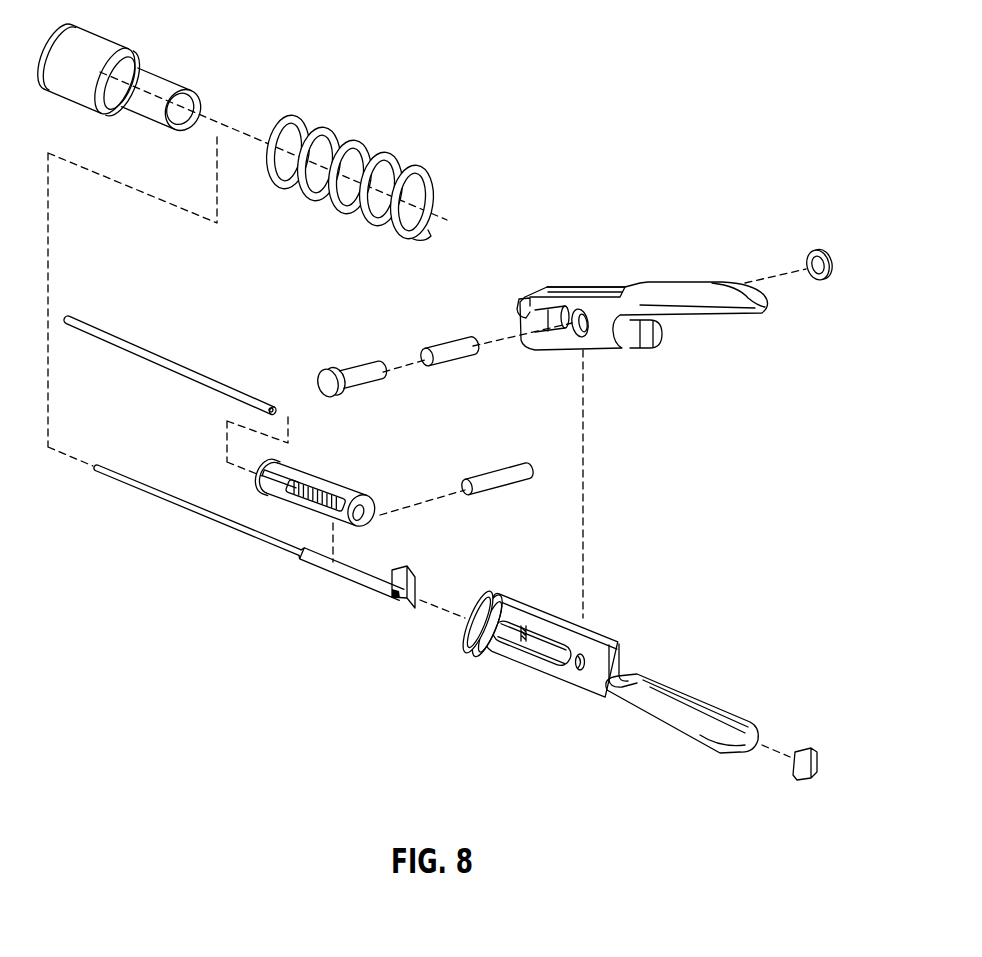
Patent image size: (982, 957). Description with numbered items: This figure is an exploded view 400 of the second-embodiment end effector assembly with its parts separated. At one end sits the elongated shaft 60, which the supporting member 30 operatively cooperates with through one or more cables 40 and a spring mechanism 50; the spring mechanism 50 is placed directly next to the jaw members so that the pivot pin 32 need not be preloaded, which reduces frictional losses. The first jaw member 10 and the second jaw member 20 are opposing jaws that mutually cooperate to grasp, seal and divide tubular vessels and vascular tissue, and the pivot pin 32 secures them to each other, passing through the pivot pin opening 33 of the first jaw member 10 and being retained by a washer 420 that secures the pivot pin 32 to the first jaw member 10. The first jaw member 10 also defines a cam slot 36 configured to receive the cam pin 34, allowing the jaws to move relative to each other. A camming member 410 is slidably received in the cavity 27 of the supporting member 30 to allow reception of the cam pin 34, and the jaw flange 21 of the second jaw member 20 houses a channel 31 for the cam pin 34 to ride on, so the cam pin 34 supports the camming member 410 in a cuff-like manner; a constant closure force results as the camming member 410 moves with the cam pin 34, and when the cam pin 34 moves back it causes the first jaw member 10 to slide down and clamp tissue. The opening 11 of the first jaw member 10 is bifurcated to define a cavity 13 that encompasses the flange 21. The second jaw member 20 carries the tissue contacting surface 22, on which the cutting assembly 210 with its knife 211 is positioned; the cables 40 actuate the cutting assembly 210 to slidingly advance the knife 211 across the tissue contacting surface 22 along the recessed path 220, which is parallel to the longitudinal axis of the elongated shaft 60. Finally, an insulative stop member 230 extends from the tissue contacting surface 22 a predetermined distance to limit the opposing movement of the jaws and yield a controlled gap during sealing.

The first jaw member 10 is at (611, 313).
The opening 11 is at (585, 286).
The cavity 13 is at (642, 340).
The second jaw member 20 is at (588, 662).
The jaw flange 21 is at (600, 668).
The tissue contacting surface 22 is at (647, 673).
The cavity 27 is at (477, 622).
The supporting member 30 is at (487, 626).
The channel 31 is at (532, 643).
The pivot pin 32 is at (357, 365).
The pivot pin opening 33 is at (573, 339).
The cam pin 34 is at (497, 466).
The cam slot 36 is at (518, 312).
The cables 40 is at (140, 352).
The spring mechanism 50 is at (364, 141).
The elongated shaft 60 is at (110, 38).
The cutting assembly 210 is at (345, 594).
The knife 211 is at (404, 567).
The recessed path 220 is at (690, 708).
The stop member 230 is at (810, 750).
The exploded view 400 is at (625, 82).
The camming member 410 is at (273, 493).
The washer 420 is at (819, 249).